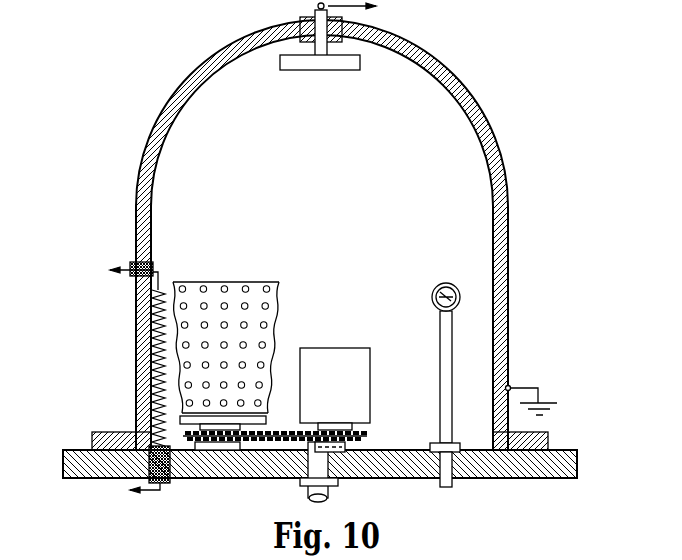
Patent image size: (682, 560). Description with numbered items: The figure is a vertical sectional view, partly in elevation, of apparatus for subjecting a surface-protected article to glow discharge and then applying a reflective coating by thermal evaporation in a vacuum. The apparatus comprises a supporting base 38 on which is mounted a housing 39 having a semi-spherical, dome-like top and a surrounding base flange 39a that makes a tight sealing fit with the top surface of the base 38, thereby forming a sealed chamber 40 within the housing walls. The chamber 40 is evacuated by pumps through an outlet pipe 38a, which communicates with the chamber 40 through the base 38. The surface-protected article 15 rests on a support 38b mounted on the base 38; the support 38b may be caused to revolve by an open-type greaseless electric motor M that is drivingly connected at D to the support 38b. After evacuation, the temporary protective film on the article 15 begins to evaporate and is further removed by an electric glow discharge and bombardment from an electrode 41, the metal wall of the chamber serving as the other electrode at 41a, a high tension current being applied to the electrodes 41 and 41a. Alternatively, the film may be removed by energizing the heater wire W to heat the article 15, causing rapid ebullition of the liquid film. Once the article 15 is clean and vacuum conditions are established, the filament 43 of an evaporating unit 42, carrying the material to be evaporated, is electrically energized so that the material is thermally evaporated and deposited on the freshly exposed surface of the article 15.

The surface-protected article 15 is at (234, 282).
The supporting base 38 is at (523, 468).
The outlet pipe 38a is at (310, 466).
The support 38b is at (262, 419).
The housing 39 is at (499, 291).
The base flange 39a is at (548, 440).
The sealed chamber 40 is at (366, 201).
The electrode 41 is at (336, 60).
The chamber wall electrode 41a is at (511, 386).
The evaporating unit 42 is at (446, 323).
The filament 43 is at (453, 290).
The driving connection D is at (368, 436).
The electric motor M is at (341, 385).
The heater wire W is at (158, 338).